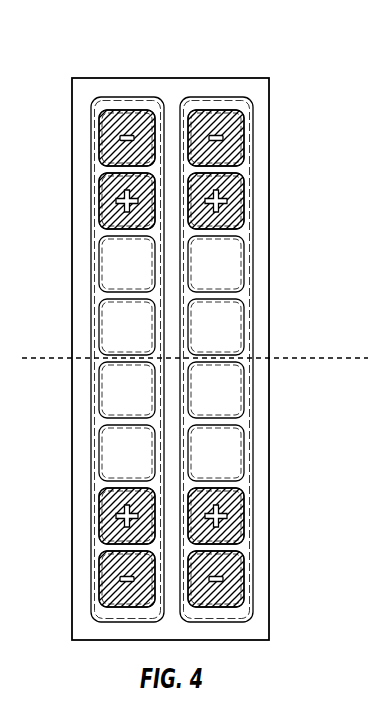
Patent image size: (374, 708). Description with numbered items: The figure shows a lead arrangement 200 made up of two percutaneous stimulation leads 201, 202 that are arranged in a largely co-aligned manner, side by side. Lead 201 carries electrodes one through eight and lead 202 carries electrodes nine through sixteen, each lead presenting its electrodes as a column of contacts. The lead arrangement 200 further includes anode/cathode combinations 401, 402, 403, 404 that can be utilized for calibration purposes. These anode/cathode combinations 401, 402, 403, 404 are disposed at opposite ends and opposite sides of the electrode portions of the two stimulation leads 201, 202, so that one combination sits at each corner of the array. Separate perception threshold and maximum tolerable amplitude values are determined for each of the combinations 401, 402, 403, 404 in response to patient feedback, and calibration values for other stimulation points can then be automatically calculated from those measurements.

The lead arrangement 200 is at (276, 53).
The percutaneous lead 201 is at (128, 97).
The percutaneous lead 202 is at (216, 97).
The anode/cathode combination 401 is at (92, 166).
The anode/cathode combination 402 is at (253, 168).
The anode/cathode combination 403 is at (92, 547).
The anode/cathode combination 404 is at (253, 550).